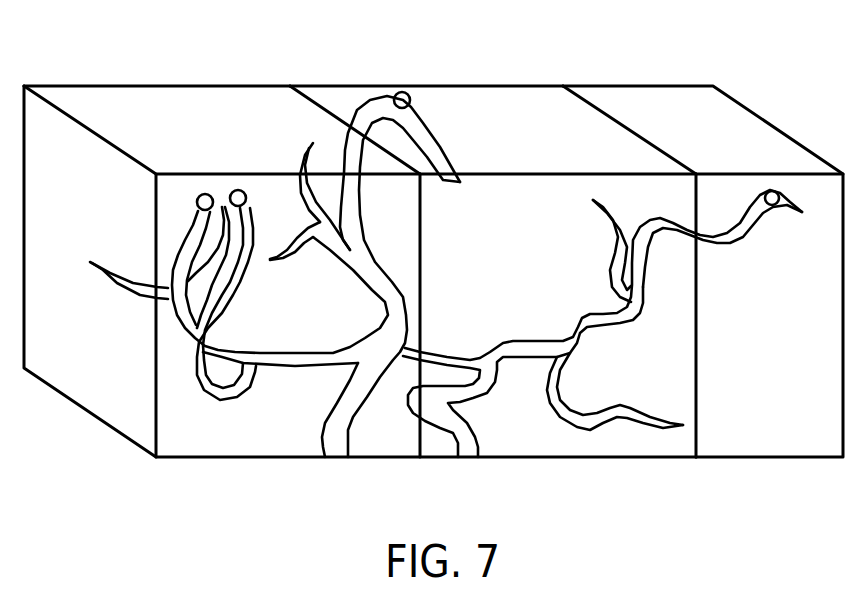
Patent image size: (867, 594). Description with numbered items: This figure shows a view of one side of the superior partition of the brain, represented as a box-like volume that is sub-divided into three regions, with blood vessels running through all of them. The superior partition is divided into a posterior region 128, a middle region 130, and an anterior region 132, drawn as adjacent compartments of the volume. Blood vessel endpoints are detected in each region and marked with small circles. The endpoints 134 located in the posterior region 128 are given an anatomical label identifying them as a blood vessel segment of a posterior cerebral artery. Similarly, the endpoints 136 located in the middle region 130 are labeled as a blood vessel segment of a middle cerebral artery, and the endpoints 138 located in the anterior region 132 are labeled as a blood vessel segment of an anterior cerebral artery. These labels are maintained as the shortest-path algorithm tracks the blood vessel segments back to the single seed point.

The posterior region 128 is at (151, 118).
The middle region 130 is at (492, 127).
The anterior region 132 is at (736, 130).
The endpoints 134 is at (239, 253).
The endpoints 136 is at (456, 237).
The endpoints 138 is at (612, 310).